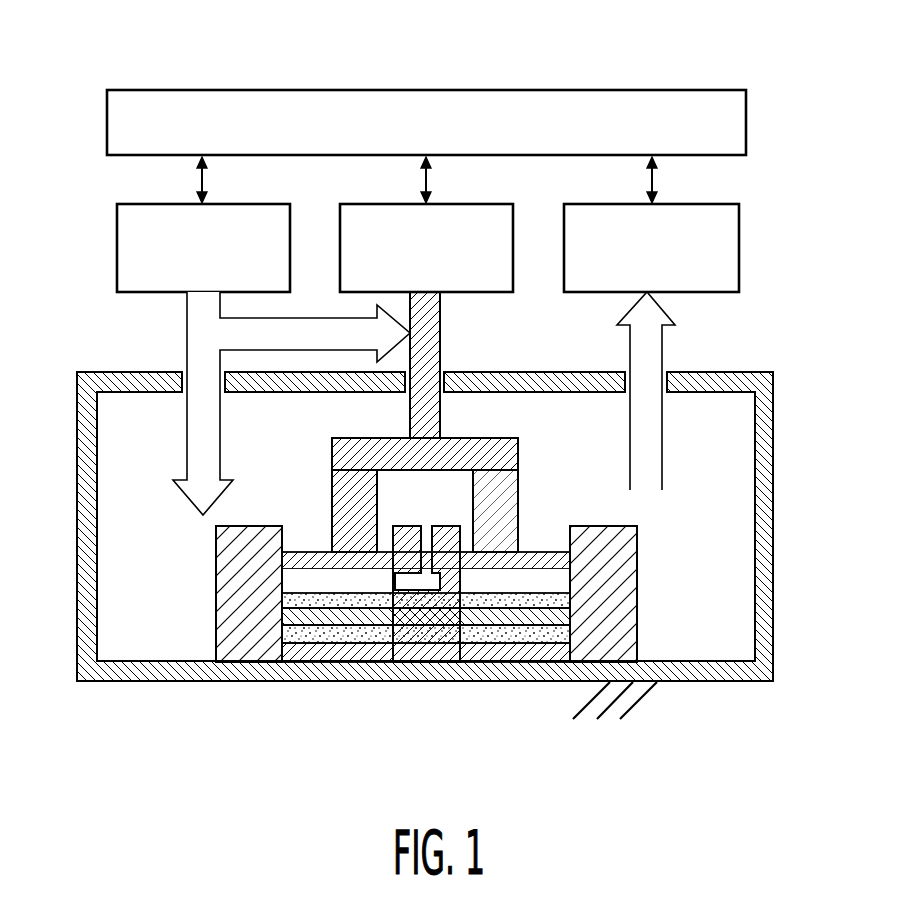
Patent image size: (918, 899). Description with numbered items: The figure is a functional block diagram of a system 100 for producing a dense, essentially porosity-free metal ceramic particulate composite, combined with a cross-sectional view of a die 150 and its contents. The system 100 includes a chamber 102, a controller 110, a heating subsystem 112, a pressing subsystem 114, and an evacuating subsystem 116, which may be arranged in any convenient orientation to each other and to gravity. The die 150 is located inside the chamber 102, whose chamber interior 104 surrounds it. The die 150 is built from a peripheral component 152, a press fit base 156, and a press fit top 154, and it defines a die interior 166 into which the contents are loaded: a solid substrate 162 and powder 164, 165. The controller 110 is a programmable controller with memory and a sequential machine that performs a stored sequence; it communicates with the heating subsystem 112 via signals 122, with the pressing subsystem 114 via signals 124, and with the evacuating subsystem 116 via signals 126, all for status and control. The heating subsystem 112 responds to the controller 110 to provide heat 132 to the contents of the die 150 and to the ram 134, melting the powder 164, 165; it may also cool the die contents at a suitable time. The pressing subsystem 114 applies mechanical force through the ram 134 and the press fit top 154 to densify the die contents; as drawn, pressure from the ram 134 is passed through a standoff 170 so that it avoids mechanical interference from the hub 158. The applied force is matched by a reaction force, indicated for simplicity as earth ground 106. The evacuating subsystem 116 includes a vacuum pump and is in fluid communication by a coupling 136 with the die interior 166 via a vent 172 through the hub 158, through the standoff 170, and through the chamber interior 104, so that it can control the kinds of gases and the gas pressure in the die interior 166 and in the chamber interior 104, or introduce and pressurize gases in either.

The system 100 is at (76, 100).
The chamber 102 is at (693, 372).
The chamber interior 104 is at (701, 488).
The earth ground 106 is at (640, 700).
The controller 110 is at (695, 90).
The heating subsystem 112 is at (117, 245).
The pressing subsystem 114 is at (451, 204).
The evacuating subsystem 116 is at (740, 234).
The signals 122 is at (200, 176).
The signals 124 is at (424, 180).
The signals 126 is at (650, 178).
The heat 132 is at (284, 332).
The ram 134 is at (441, 325).
The coupling 136 is at (628, 350).
The die 150 is at (412, 582).
The peripheral component 152 is at (216, 532).
The press fit top 154 is at (313, 550).
The press fit base 156 is at (313, 656).
The hub 158 is at (448, 527).
The solid substrate 162 is at (350, 620).
The powder 164 is at (333, 628).
The powder 165 is at (378, 598).
The die interior 166 is at (317, 584).
The standoff 170 is at (332, 492).
The vent 172 is at (437, 500).